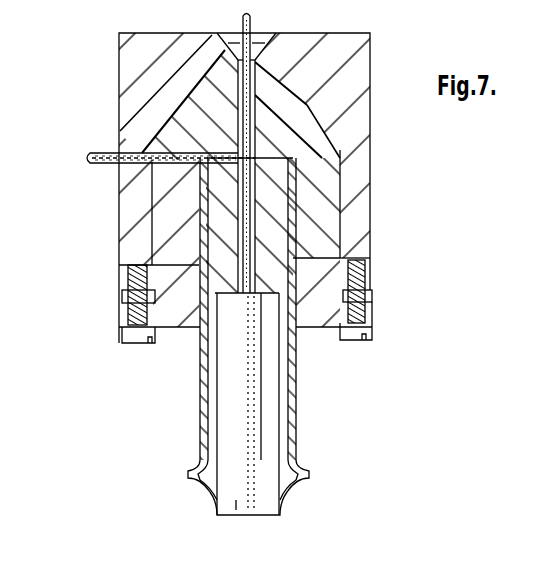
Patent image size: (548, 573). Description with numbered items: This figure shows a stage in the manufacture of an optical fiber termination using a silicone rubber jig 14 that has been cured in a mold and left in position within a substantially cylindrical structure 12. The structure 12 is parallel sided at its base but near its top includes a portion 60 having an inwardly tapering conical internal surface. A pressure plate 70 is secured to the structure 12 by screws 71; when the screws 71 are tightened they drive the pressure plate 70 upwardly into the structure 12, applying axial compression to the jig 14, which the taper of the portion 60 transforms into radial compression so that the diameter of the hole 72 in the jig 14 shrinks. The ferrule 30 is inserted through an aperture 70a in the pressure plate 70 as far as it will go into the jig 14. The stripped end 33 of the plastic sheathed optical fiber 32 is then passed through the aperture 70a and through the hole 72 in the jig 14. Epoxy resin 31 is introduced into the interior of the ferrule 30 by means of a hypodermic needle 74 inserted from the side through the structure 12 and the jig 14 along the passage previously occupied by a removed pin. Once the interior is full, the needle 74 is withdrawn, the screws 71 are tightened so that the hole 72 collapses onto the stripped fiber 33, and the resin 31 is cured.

The portion having an inwardly tapering conical internal surface 60 is at (370, 63).
The jig 14 is at (322, 122).
The substantially cylindrical structure 12 is at (363, 192).
The hole in the jig 72 is at (217, 62).
The stripped end of the optical fiber 33 is at (249, 23).
The hypodermic needle 74 is at (92, 155).
The epoxy resin 31 is at (273, 228).
The ferrule 30 is at (300, 255).
The plastic sheathed optical fiber 32 is at (273, 432).
The screws 71 is at (128, 303).
The pressure plate 70 is at (177, 323).
The aperture in the pressure plate 70a is at (302, 285).